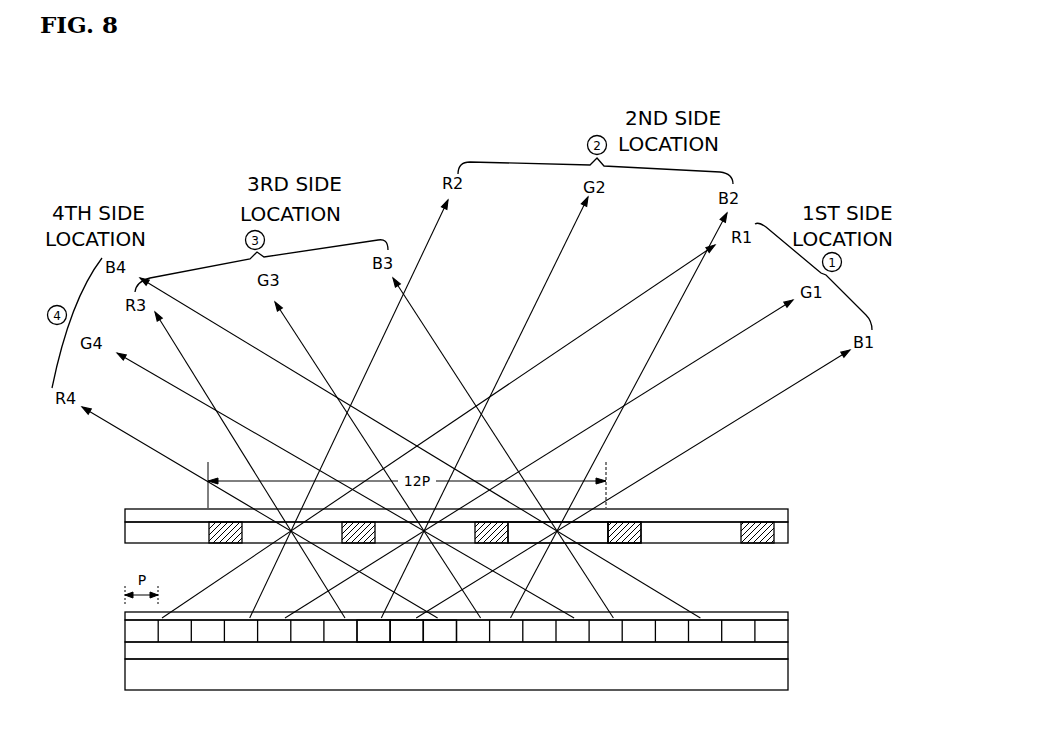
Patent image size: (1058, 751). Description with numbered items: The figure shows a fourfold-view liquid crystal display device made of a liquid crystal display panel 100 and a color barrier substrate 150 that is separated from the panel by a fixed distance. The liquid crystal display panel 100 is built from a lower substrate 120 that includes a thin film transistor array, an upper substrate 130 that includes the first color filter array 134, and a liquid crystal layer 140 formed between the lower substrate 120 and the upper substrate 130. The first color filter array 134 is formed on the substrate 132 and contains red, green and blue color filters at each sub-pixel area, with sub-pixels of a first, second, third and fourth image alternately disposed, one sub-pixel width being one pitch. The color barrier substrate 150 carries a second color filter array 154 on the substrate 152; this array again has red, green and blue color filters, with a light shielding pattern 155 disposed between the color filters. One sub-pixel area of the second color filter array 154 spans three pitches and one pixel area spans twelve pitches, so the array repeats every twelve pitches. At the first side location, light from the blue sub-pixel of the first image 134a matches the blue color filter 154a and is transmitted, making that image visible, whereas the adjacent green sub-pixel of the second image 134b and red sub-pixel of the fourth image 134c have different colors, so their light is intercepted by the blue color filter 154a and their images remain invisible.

The liquid crystal display panel 100 is at (524, 664).
The lower substrate 120 is at (502, 674).
The upper substrate 130 is at (503, 664).
The substrate 132 is at (789, 615).
The first color filter array 134 is at (789, 632).
The sub-pixel B1 134a is at (405, 641).
The sub-pixel G2 134b is at (363, 641).
The sub-pixel R4 134c is at (443, 641).
The liquid crystal layer 140 is at (789, 657).
The color barrier substrate 150 is at (503, 503).
The substrate 152 is at (789, 511).
The second color filter array 154 is at (789, 529).
The blue color filter 154a is at (592, 528).
The light shielding pattern 155 is at (630, 545).